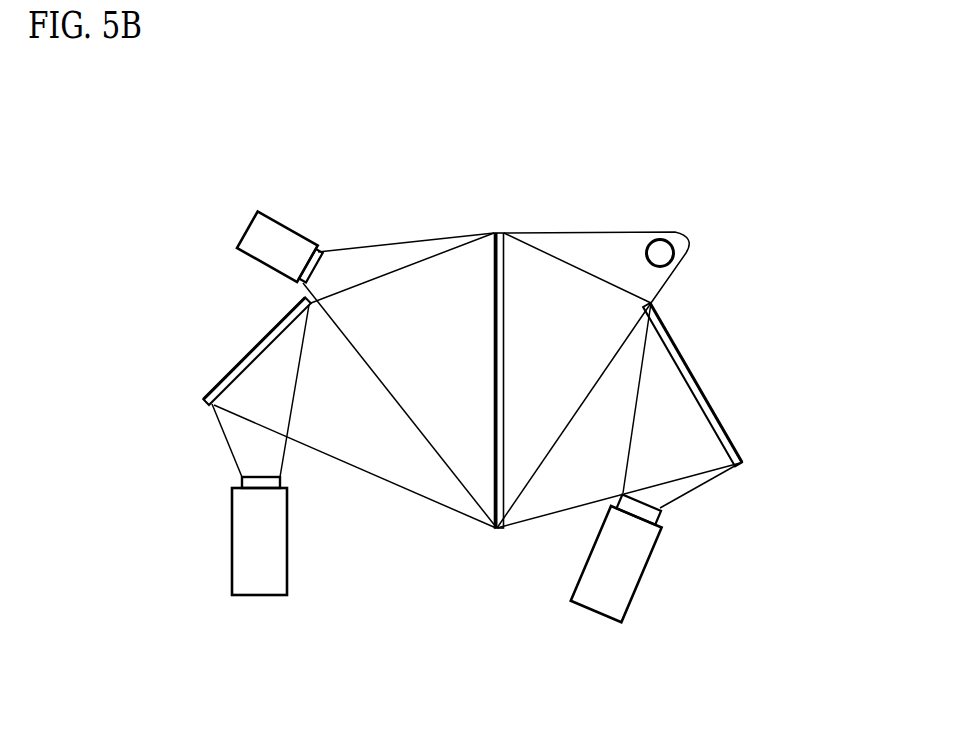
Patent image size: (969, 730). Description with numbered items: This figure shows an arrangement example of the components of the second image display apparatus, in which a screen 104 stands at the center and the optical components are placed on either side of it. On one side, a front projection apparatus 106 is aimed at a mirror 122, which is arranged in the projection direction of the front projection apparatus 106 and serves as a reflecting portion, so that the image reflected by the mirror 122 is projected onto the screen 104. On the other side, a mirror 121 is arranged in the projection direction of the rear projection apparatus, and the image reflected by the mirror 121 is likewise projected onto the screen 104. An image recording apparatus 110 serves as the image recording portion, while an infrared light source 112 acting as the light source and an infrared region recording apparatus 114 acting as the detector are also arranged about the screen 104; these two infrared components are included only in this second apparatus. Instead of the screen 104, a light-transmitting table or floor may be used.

The screen 104 is at (493, 528).
The front projection apparatus 106 is at (257, 597).
The image recording apparatus 110 is at (392, 367).
The infrared light source 112 is at (659, 239).
The infrared region recording apparatus 114 is at (288, 230).
The mirror 121 is at (722, 322).
The mirror 122 is at (233, 378).